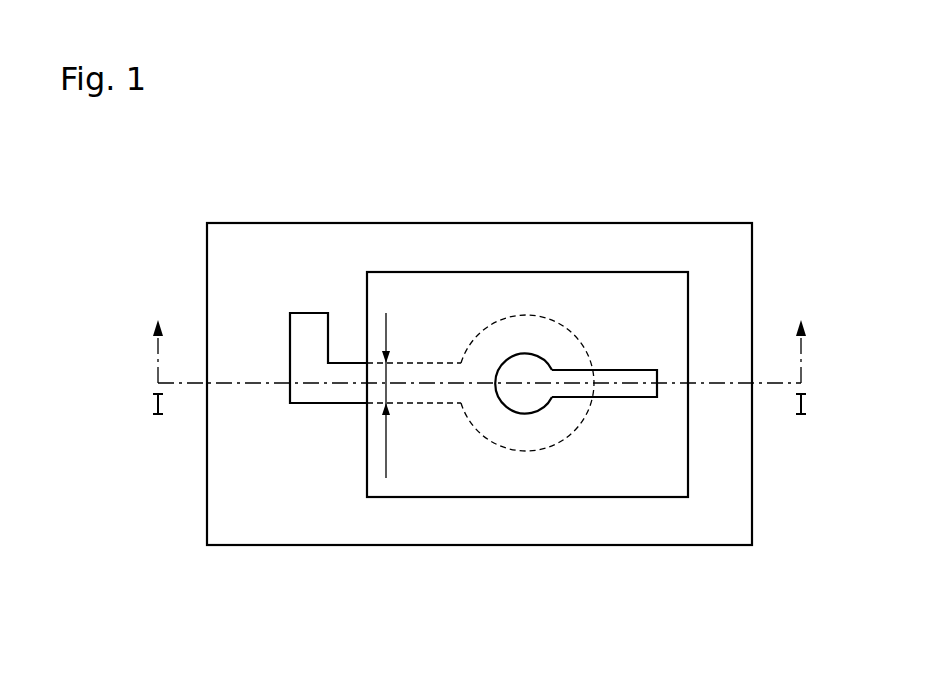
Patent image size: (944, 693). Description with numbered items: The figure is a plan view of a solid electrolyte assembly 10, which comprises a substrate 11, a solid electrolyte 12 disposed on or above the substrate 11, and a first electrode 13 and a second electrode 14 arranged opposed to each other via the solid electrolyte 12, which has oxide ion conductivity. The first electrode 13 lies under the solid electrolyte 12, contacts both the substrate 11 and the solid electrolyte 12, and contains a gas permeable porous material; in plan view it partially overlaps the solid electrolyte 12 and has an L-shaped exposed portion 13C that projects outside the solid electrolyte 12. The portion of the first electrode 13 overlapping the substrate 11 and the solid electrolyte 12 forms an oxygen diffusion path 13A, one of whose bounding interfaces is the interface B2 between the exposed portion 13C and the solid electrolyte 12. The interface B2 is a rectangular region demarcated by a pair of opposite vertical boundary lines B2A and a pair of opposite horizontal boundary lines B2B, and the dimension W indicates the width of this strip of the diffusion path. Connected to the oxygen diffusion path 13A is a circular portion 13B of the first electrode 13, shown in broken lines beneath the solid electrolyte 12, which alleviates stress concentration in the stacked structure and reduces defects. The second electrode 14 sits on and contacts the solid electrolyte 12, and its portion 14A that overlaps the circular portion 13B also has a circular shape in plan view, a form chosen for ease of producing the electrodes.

The solid electrolyte assembly 10 is at (738, 166).
The substrate 11 is at (752, 520).
The solid electrolyte 12 is at (688, 462).
The first electrode 13 is at (474, 388).
The oxygen diffusion path 13A is at (437, 362).
The circular portion 13B is at (535, 315).
The L-shaped exposed portion 13C is at (307, 313).
The second electrode 14 is at (669, 281).
The portion of the second electrode 14A is at (553, 360).
The interface B2 is at (292, 356).
The vertical boundary lines B2A is at (367, 363).
The horizontal boundary lines B2B is at (367, 373).
The width W is at (395, 397).